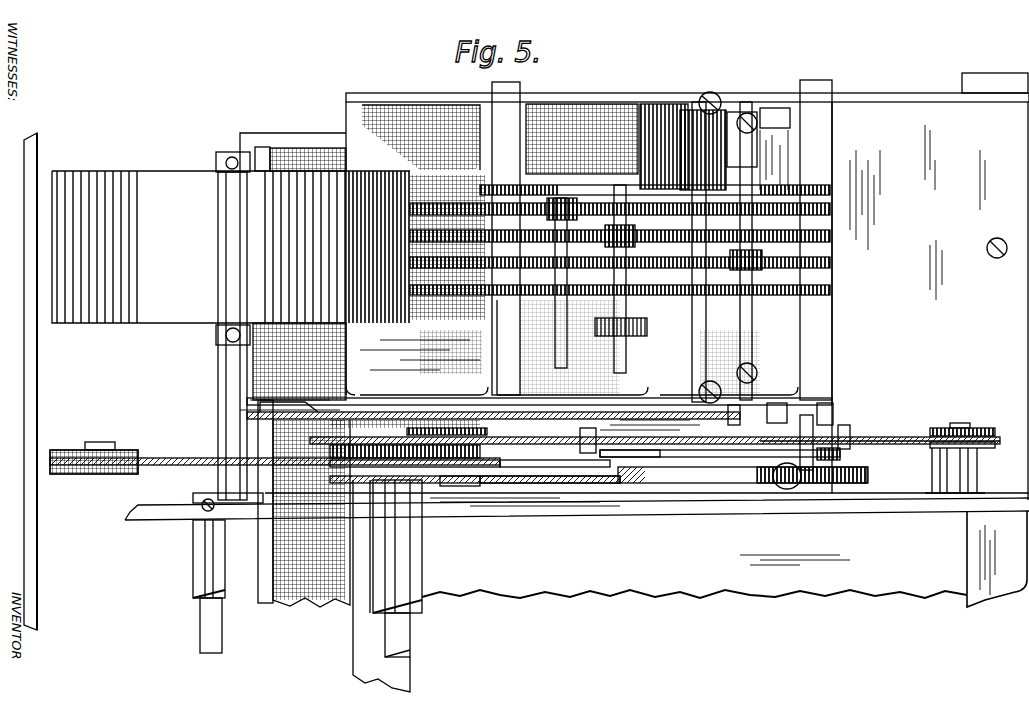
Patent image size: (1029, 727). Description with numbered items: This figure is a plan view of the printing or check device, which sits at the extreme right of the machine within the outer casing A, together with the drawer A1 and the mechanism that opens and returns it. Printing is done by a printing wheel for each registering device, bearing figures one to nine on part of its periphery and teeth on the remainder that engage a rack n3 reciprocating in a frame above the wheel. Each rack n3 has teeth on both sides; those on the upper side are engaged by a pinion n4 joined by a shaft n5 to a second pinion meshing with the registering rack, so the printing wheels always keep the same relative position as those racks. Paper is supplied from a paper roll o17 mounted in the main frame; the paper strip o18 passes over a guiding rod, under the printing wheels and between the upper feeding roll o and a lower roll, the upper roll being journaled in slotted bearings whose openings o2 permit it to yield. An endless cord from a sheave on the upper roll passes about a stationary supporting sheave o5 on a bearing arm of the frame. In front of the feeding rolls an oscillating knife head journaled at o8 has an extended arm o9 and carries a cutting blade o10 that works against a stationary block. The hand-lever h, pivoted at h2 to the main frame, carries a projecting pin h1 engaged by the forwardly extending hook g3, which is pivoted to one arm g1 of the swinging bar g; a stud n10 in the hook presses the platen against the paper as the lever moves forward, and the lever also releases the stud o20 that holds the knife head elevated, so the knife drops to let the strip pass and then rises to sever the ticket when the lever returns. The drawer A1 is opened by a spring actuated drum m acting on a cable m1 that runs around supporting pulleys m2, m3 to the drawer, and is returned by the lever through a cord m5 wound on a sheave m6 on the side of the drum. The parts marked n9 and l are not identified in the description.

The outer casing A is at (38, 381).
The drawer A1 is at (138, 510).
The upper feeding roll o is at (727, 108).
The openings of slotted bearings o2 is at (723, 402).
The stationary supporting sheave o5 is at (262, 413).
The journal of knife head o8 is at (800, 410).
The extended arm o9 is at (805, 420).
The cutting blade o10 is at (758, 137).
The paper roll o17 is at (231, 247).
The paper strip o18 is at (447, 247).
The stud o20 is at (845, 434).
The rack n3 is at (830, 290).
The pinion n4 is at (650, 250).
The shaft n5 is at (558, 350).
The bar n9 is at (662, 453).
The stud n10 is at (655, 438).
The spring actuated drum m is at (415, 443).
The cable m1 is at (880, 432).
The supporting pulley m2 is at (975, 432).
The supporting pulley m3 is at (125, 456).
The cord m5 is at (560, 483).
The spool or sheave m6 is at (343, 562).
The swinging bar g is at (358, 535).
The swinging arm g1 is at (478, 486).
The hook g3 is at (600, 467).
The hand-lever h is at (743, 475).
The projecting pin h1 is at (813, 464).
The pivot of hand-lever h2 is at (845, 478).
The panel l is at (997, 559).